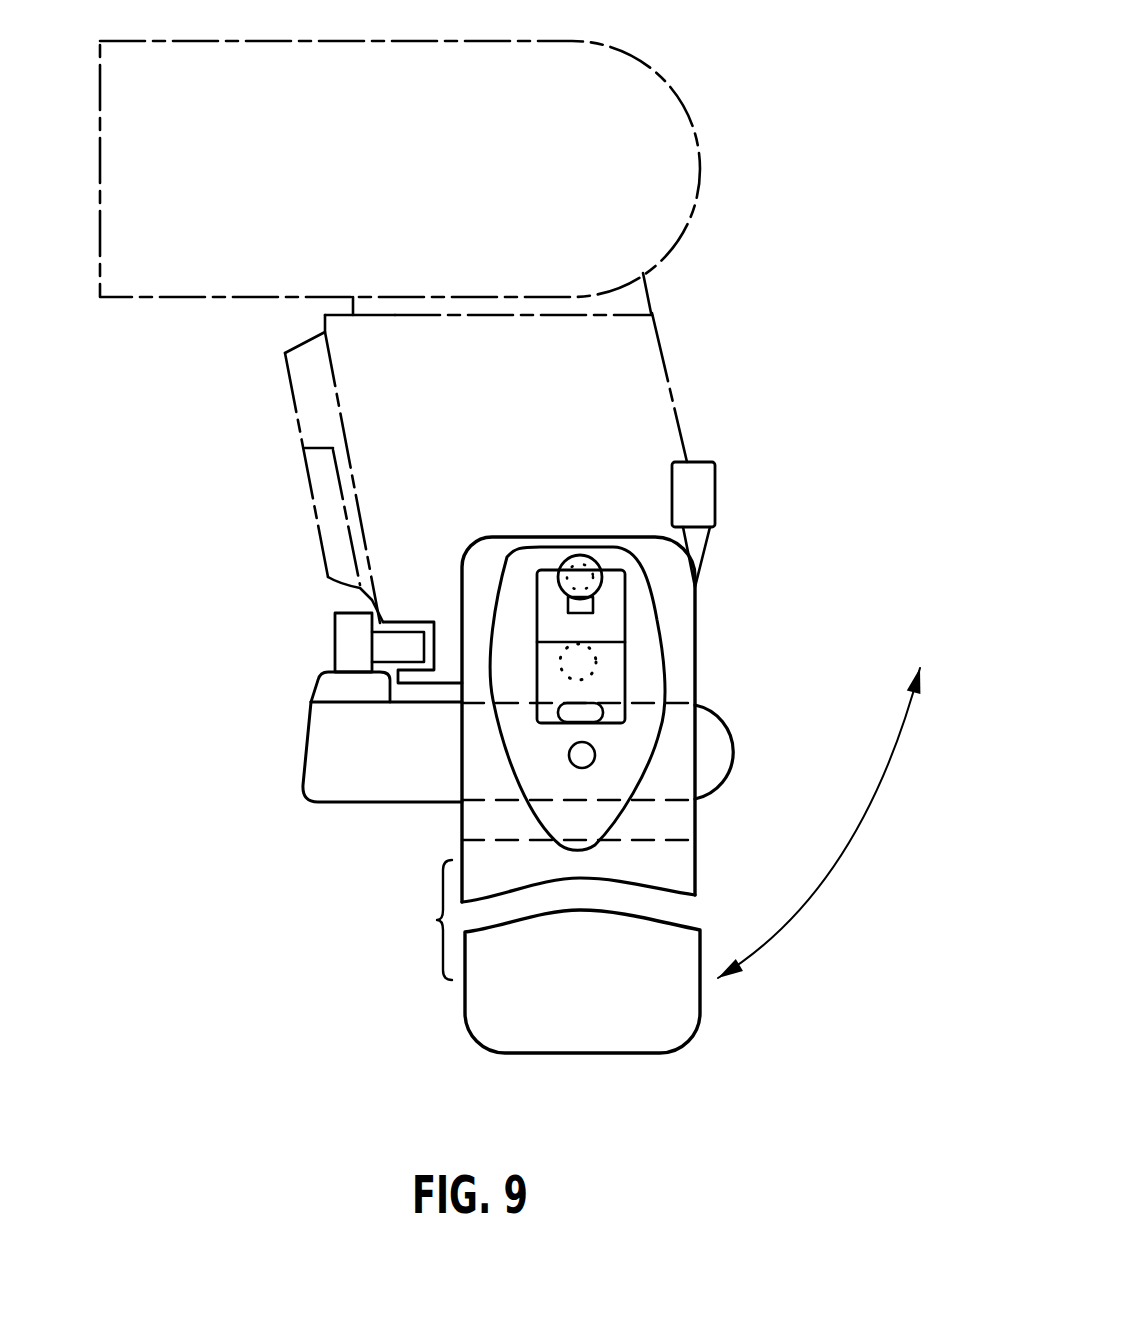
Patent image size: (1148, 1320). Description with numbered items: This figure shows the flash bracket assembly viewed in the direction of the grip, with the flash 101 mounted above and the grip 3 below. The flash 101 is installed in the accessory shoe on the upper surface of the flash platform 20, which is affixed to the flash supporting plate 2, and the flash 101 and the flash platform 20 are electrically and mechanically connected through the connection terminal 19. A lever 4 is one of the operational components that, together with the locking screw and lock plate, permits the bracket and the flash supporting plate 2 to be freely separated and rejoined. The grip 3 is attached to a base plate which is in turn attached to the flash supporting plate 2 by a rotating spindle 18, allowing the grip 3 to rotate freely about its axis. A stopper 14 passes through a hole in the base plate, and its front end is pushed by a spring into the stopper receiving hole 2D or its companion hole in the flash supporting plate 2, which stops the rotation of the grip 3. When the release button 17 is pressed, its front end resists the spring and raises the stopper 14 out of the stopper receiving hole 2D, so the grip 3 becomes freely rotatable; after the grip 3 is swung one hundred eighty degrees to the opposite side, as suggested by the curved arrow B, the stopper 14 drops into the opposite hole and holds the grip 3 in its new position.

The flash 101 is at (683, 213).
The lever 4 is at (707, 535).
The stopper 14 is at (600, 573).
The release button 17 is at (613, 630).
The rotating spindle 18 is at (603, 667).
The connection terminal 19 is at (390, 650).
The flash platform 20 is at (323, 748).
The flash supporting plate 2 is at (475, 818).
The stopper receiving hole 2D is at (569, 758).
The grip 3 is at (692, 875).
The rotation direction B is at (819, 823).